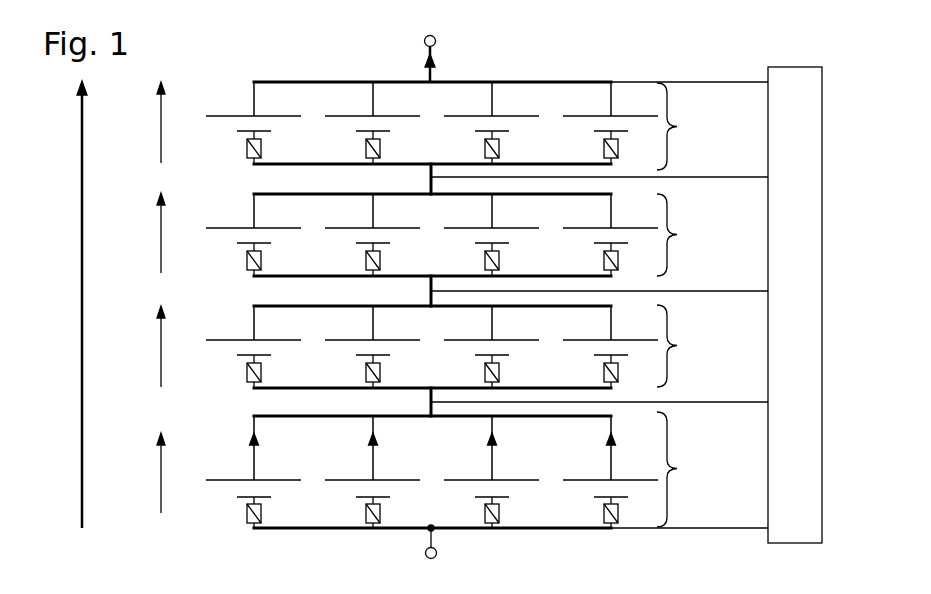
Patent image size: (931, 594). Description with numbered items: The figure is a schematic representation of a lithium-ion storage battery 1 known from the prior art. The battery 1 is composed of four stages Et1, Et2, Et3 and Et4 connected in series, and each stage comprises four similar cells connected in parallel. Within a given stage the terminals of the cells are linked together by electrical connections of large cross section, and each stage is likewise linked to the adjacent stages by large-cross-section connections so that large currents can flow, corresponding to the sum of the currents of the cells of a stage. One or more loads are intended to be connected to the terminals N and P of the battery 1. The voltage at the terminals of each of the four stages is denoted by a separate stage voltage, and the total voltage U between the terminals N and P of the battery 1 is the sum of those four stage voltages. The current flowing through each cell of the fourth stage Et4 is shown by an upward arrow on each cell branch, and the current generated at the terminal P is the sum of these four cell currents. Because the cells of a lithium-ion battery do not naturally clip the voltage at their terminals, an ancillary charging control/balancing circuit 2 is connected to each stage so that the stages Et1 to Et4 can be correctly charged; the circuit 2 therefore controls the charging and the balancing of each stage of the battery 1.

The lithium-ion storage battery 1 is at (489, 68).
The charging control/balancing circuit 2 is at (793, 67).
The terminal P is at (436, 58).
The terminal N is at (446, 543).
The total voltage U is at (72, 304).
The first stage Et1 is at (690, 126).
The second stage Et2 is at (690, 235).
The third stage Et3 is at (690, 346).
The fourth stage Et4 is at (690, 469).